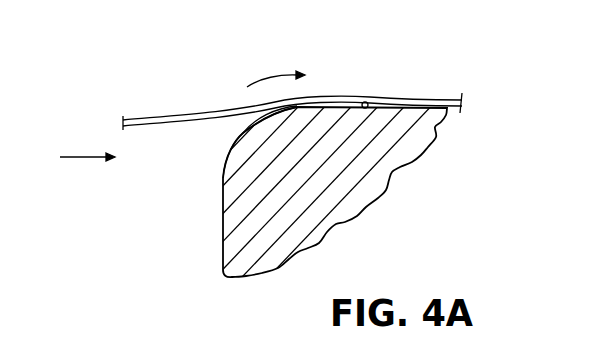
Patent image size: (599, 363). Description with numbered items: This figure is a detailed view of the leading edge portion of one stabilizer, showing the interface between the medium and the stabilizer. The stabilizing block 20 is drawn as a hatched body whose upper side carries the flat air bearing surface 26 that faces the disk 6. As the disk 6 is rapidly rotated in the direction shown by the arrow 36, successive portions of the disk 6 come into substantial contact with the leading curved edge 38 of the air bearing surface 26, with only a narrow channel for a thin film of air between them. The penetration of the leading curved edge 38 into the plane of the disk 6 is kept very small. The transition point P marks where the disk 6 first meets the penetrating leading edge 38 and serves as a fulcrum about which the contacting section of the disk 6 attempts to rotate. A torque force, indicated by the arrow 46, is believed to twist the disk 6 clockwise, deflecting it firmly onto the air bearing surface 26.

The disk 6 is at (180, 119).
The arrow 46 is at (250, 86).
The arrow 36 is at (70, 160).
The leading curved edge 38 is at (233, 150).
The stabilizing block 20 is at (223, 230).
The air bearing surface 26 is at (367, 107).
The transition point P is at (250, 128).